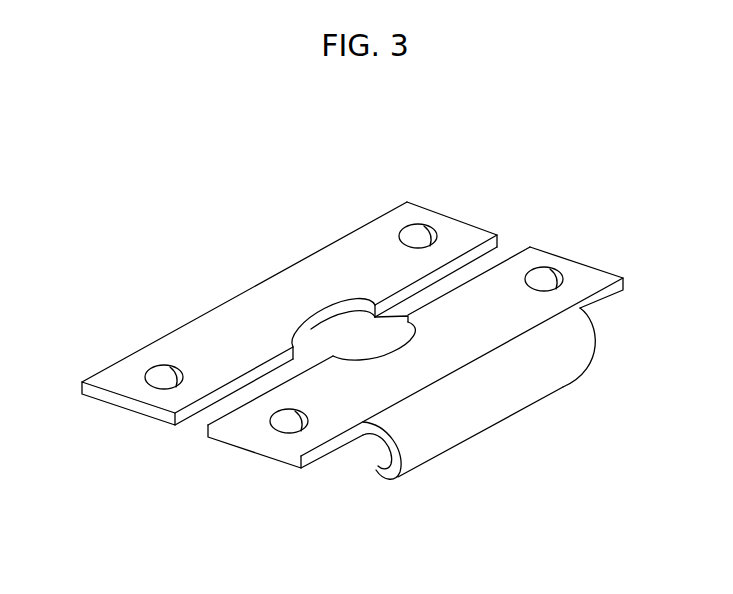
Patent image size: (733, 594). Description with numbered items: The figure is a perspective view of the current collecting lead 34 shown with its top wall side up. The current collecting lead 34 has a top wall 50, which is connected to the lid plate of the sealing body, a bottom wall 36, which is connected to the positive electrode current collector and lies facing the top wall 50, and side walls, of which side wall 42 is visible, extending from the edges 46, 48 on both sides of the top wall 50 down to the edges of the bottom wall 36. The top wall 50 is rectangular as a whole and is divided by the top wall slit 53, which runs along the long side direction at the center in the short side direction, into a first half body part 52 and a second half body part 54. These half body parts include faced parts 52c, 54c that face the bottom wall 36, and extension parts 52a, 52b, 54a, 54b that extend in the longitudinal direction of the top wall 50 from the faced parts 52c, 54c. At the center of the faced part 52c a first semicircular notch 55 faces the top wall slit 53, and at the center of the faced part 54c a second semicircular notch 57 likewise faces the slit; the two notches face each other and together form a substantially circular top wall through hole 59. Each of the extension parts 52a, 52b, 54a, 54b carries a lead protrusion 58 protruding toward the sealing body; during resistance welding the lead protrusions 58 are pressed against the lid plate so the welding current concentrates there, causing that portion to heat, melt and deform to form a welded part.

The current collecting lead 34 is at (596, 387).
The bottom wall 36 is at (370, 462).
The side wall 42 is at (453, 433).
The edge 46 is at (490, 357).
The edge 48 is at (232, 292).
The top wall 50 is at (97, 470).
The first half body part 52 is at (158, 412).
The extension part 52a is at (180, 347).
The extension part 52b is at (418, 226).
The faced part 52c is at (267, 290).
The top wall slit 53 is at (496, 240).
The second half body part 54 is at (223, 438).
The extension part 54a is at (317, 434).
The extension part 54b is at (596, 280).
The faced part 54c is at (448, 350).
The first semicircular notch 55 is at (322, 305).
The second semicircular notch 57 is at (372, 357).
The lead protrusion 58 is at (148, 377).
The top wall through hole 59 is at (242, 168).